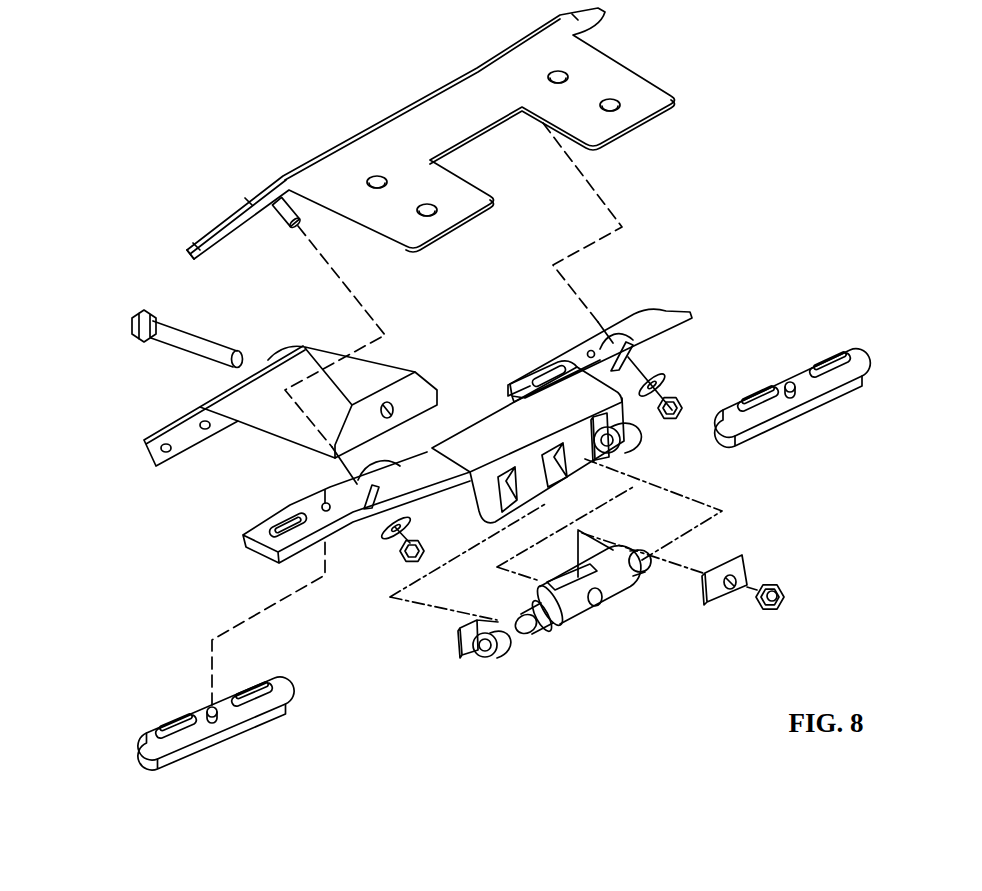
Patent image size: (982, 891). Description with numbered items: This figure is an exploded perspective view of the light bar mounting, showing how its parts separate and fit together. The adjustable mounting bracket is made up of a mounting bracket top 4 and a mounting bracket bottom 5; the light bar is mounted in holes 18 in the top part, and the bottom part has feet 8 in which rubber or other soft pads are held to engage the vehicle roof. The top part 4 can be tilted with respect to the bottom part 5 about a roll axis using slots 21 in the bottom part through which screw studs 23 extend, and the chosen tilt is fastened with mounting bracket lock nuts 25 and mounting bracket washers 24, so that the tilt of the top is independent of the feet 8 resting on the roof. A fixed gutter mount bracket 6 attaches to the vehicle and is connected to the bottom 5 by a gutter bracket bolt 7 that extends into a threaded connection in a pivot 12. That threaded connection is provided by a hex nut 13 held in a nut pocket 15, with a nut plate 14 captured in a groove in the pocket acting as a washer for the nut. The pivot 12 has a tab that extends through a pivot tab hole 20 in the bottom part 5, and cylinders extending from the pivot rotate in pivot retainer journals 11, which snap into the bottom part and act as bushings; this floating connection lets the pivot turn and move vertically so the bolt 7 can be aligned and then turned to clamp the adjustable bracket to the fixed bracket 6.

The mounting bracket top 4 is at (400, 148).
The holes 18 is at (613, 108).
The screw studs 23 is at (276, 222).
The gutter bracket bolt 7 is at (185, 347).
The gutter mount bracket 6 is at (268, 442).
The mounting bracket bottom 5 is at (258, 556).
The slots 21 is at (368, 500).
The mounting bracket washers 24 is at (388, 532).
The mounting bracket lock nuts 25 is at (412, 562).
The pivot tab hole 20 is at (590, 462).
The pivot retainer journals 11 is at (614, 441).
The pivot 12 is at (583, 618).
The nut pocket 15 is at (612, 602).
The nut plate 14 is at (735, 560).
The hex nut 13 is at (787, 587).
The feet 8 is at (178, 720).